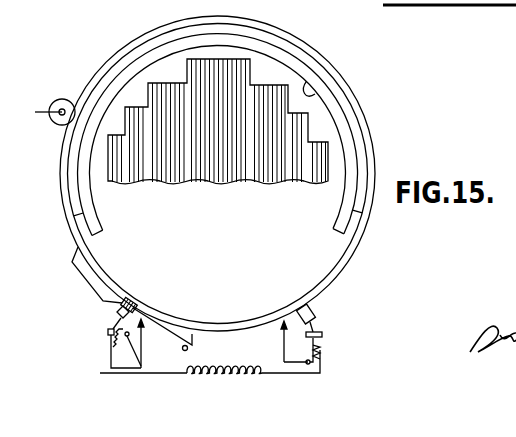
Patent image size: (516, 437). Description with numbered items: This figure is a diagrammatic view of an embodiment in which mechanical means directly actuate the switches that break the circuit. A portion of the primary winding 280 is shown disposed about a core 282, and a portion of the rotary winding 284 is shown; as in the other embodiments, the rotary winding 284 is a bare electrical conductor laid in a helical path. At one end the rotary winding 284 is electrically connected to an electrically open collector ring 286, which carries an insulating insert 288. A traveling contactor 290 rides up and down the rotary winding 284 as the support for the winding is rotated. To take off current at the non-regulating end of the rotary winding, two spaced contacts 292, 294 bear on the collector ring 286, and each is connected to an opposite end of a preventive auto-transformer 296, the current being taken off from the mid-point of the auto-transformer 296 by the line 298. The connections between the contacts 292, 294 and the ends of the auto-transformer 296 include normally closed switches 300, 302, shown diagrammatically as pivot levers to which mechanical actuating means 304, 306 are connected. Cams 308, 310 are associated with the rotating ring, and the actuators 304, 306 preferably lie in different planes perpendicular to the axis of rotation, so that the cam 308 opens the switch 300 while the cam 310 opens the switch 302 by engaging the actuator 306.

The primary winding 280 is at (313, 97).
The core 282 is at (233, 80).
The rotary winding 284 is at (359, 161).
The collector ring 286 is at (355, 250).
The insulating insert 288 is at (128, 302).
The traveling contactor 290 is at (63, 98).
The contact 292 is at (118, 308).
The contact 294 is at (315, 313).
The preventive auto-transformer 296 is at (224, 360).
The line 298 is at (112, 373).
The normally closed switch 300 is at (104, 344).
The normally closed switch 302 is at (332, 337).
The mechanical actuating means 304 is at (159, 343).
The mechanical actuating means 306 is at (283, 356).
The cam 308 is at (186, 341).
The cam 310 is at (83, 279).